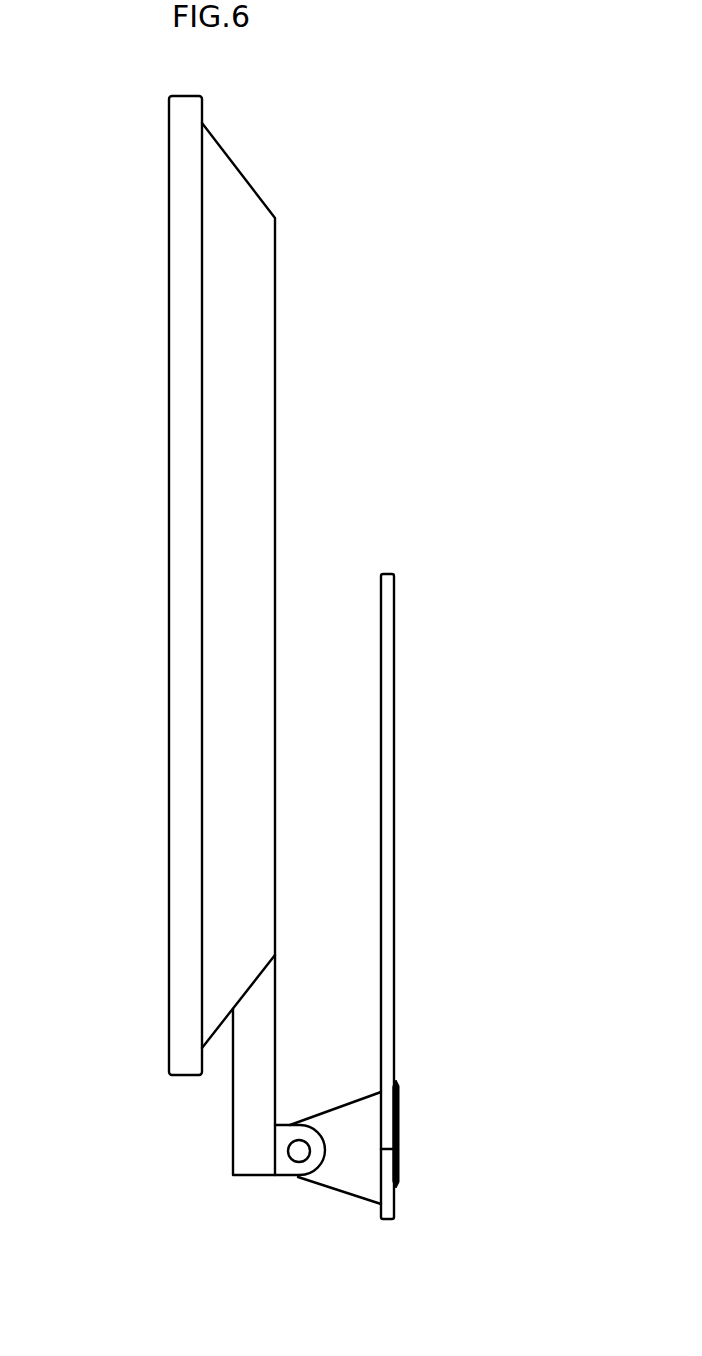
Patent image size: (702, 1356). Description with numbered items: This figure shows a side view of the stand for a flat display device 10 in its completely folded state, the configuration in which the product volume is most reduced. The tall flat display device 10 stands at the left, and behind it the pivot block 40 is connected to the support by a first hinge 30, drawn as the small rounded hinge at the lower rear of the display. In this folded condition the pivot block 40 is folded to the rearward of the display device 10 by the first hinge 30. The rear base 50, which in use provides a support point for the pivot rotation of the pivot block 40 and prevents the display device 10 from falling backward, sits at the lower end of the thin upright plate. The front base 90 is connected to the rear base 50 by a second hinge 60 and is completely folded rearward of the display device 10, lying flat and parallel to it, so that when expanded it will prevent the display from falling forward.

The flat display device 10 is at (183, 370).
The first hinge 30 is at (299, 1152).
The pivot block 40 is at (350, 1178).
The rear base 50 is at (393, 1202).
The second hinge 60 is at (397, 1118).
The front base 90 is at (387, 677).